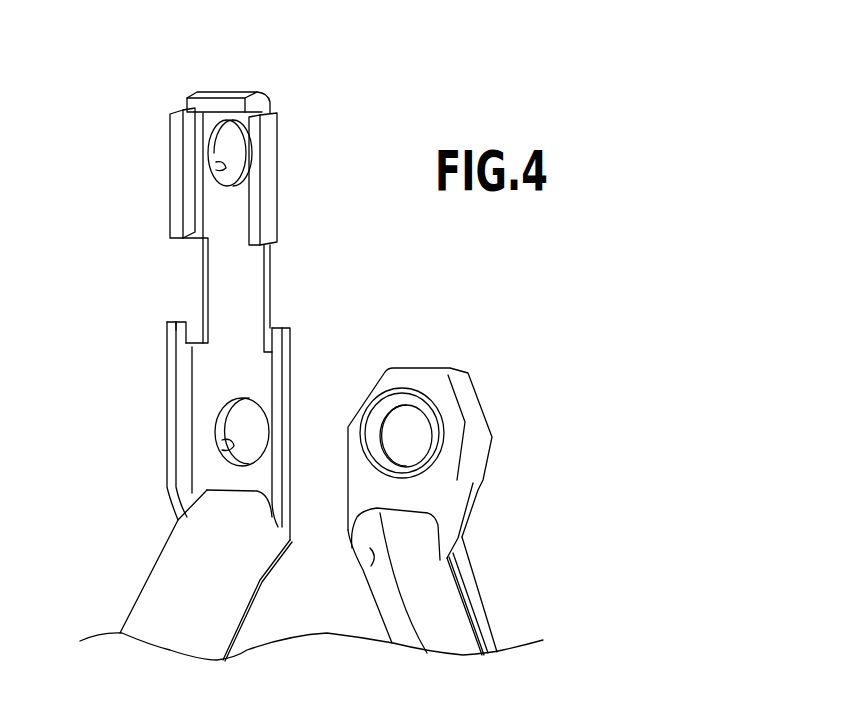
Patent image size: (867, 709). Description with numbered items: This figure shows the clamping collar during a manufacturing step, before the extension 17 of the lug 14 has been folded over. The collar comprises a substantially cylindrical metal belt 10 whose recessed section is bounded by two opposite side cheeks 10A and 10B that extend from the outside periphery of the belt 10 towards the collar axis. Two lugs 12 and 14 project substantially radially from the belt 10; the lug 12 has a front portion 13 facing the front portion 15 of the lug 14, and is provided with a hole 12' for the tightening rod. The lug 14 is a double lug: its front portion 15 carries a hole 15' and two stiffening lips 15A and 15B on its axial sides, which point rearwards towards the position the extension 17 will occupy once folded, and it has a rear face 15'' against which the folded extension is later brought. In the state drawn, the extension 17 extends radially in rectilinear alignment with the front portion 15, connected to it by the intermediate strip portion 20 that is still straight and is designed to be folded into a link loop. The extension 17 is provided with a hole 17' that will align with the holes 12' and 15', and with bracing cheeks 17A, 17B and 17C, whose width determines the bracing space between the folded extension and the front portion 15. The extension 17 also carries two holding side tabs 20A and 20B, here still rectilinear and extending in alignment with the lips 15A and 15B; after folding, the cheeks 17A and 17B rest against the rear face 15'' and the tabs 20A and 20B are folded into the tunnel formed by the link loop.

The belt 10 is at (475, 558).
The side cheek 10A is at (477, 588).
The side cheek 10B is at (373, 562).
The lug 12 is at (448, 436).
The hole 12' is at (402, 396).
The front portion 13 is at (447, 480).
The lug 14 is at (293, 240).
The front portion 15 is at (234, 427).
The stiffening lip 15A is at (285, 432).
The stiffening lip 15B is at (170, 363).
The hole 15' is at (191, 436).
The rear face 15'' is at (193, 447).
The extension 17 is at (247, 142).
The bracing cheek 17A is at (267, 162).
The bracing cheek 17B is at (175, 137).
The bracing cheek 17C is at (220, 95).
The hole 17' is at (187, 160).
The strip portion 20 is at (233, 262).
The holding side tab 20A is at (277, 330).
The holding side tab 20B is at (170, 320).